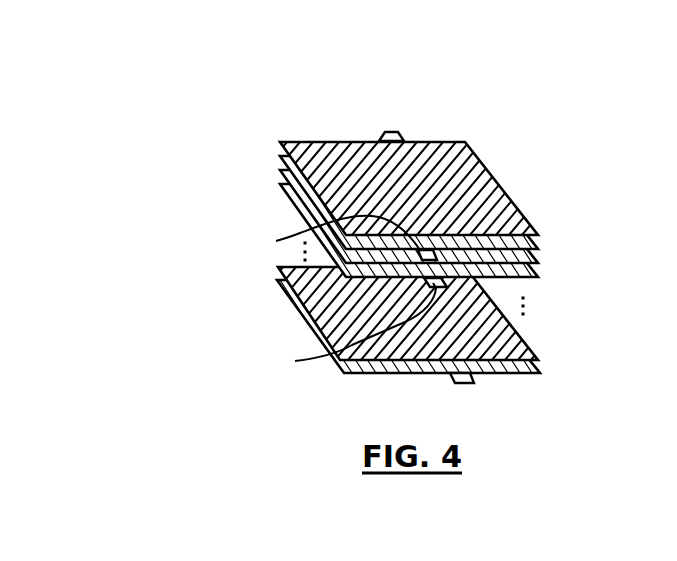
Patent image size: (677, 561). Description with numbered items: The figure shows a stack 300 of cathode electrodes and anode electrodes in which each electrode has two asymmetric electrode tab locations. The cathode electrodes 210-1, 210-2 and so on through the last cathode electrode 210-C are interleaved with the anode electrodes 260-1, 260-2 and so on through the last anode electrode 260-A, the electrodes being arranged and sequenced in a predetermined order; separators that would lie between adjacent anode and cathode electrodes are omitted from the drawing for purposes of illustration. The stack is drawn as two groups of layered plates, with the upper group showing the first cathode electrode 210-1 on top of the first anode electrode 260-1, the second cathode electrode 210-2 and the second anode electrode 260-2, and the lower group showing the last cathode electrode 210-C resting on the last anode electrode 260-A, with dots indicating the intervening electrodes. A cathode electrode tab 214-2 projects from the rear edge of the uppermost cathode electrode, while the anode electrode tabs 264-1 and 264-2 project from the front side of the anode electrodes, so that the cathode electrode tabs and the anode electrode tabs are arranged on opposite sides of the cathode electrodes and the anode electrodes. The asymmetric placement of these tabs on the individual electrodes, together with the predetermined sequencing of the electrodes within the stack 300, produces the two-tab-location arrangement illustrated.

The stack 300 is at (258, 77).
The cathode electrode 210-1 is at (490, 172).
The cathode electrode 210-2 is at (540, 257).
The cathode electrode 210-C is at (540, 366).
The anode electrode 260-1 is at (283, 162).
The anode electrode 260-2 is at (281, 193).
The anode electrode 260-A is at (302, 308).
The cathode electrode tab 214-2 is at (392, 132).
The anode electrode tab 264-1 is at (330, 294).
The anode electrode tab 264-2 is at (462, 383).